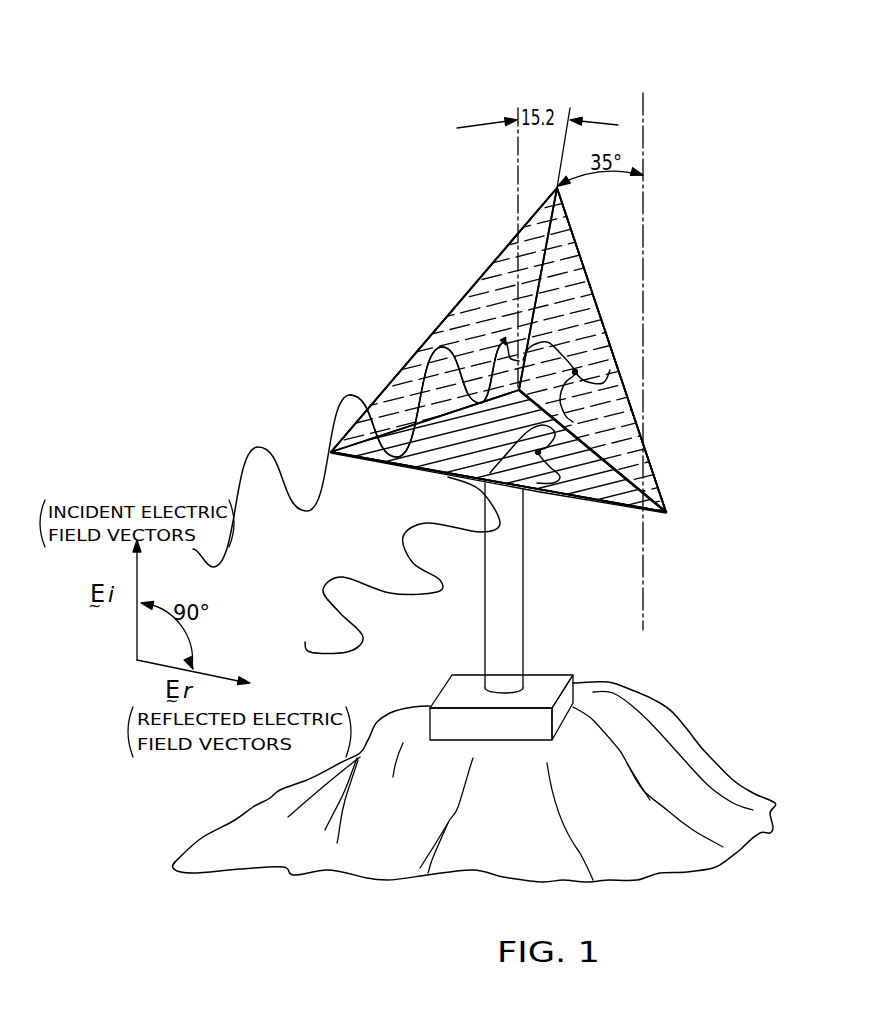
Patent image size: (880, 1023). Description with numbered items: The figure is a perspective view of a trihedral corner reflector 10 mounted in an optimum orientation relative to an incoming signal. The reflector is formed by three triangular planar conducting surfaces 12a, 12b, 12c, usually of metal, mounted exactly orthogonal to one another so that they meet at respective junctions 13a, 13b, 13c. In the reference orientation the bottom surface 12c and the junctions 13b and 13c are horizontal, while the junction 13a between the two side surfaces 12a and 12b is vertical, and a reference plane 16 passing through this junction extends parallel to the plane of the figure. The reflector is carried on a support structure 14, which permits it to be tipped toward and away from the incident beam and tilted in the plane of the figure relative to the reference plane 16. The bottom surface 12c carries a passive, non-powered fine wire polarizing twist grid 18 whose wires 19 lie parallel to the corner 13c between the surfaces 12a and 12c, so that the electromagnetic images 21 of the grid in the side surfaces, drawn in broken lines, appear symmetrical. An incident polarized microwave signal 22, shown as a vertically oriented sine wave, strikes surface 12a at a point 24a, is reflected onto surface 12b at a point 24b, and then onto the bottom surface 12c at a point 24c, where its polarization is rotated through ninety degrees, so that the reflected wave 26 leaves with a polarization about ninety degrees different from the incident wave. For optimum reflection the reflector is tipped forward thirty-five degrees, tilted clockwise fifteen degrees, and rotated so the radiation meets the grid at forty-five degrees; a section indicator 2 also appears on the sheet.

The trihedral corner reflector 10 is at (660, 324).
The triangular planar conducting surface 12a is at (447, 317).
The triangular planar conducting surface 12b is at (597, 295).
The bottom triangular surface 12c is at (622, 508).
The junction 13a is at (540, 264).
The junction 13b is at (617, 466).
The junction 13c is at (420, 357).
The support structure 14 is at (521, 607).
The reference plane 16 is at (647, 128).
The polarizing twist grid 18 is at (582, 480).
The wires 19 is at (373, 427).
The electromagnetic images of the polarization grid 21 is at (502, 252).
The incident polarized microwave signal 22 is at (289, 475).
The point 24a is at (504, 340).
The point 24b is at (627, 400).
The point 24c is at (450, 474).
The reflected wave 26 is at (382, 593).
The section line FIG. 2 is at (558, 92).